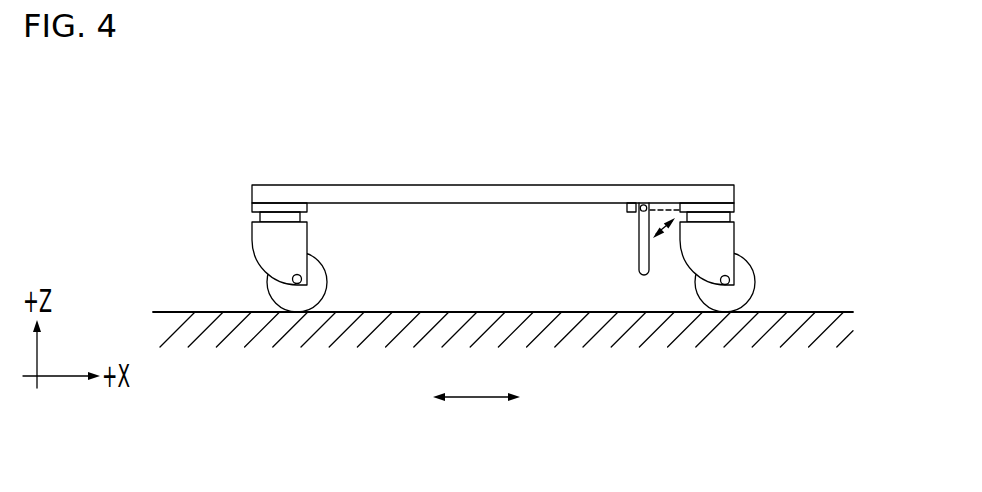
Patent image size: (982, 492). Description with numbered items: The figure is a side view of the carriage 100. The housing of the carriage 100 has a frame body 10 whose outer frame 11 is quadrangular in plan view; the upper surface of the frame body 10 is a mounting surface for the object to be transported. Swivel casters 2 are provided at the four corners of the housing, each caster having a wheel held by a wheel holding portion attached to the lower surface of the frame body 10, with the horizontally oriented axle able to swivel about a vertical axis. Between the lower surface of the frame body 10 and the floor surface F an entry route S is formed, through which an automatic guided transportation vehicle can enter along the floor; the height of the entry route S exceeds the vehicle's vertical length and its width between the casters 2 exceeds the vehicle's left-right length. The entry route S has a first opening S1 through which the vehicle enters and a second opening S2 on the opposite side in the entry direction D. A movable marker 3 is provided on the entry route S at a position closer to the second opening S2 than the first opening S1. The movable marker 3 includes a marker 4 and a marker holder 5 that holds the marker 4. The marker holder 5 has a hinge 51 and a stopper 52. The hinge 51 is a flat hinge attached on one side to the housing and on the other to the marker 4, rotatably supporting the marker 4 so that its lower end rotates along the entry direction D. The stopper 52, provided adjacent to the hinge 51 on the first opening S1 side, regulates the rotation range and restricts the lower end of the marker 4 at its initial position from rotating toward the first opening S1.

The carriage 100 is at (254, 127).
The frame body 10 is at (493, 163).
The outer frame 11 is at (510, 185).
The swivel caster 2 is at (487, 320).
The movable marker 3 is at (625, 165).
The marker 4 is at (643, 266).
The marker holder 5 is at (657, 224).
The hinge 51 is at (652, 207).
The stopper 52 is at (632, 200).
The entry route S is at (428, 263).
The first opening S1 is at (239, 296).
The second opening S2 is at (748, 296).
The floor surface F is at (543, 312).
The entry direction D is at (476, 414).